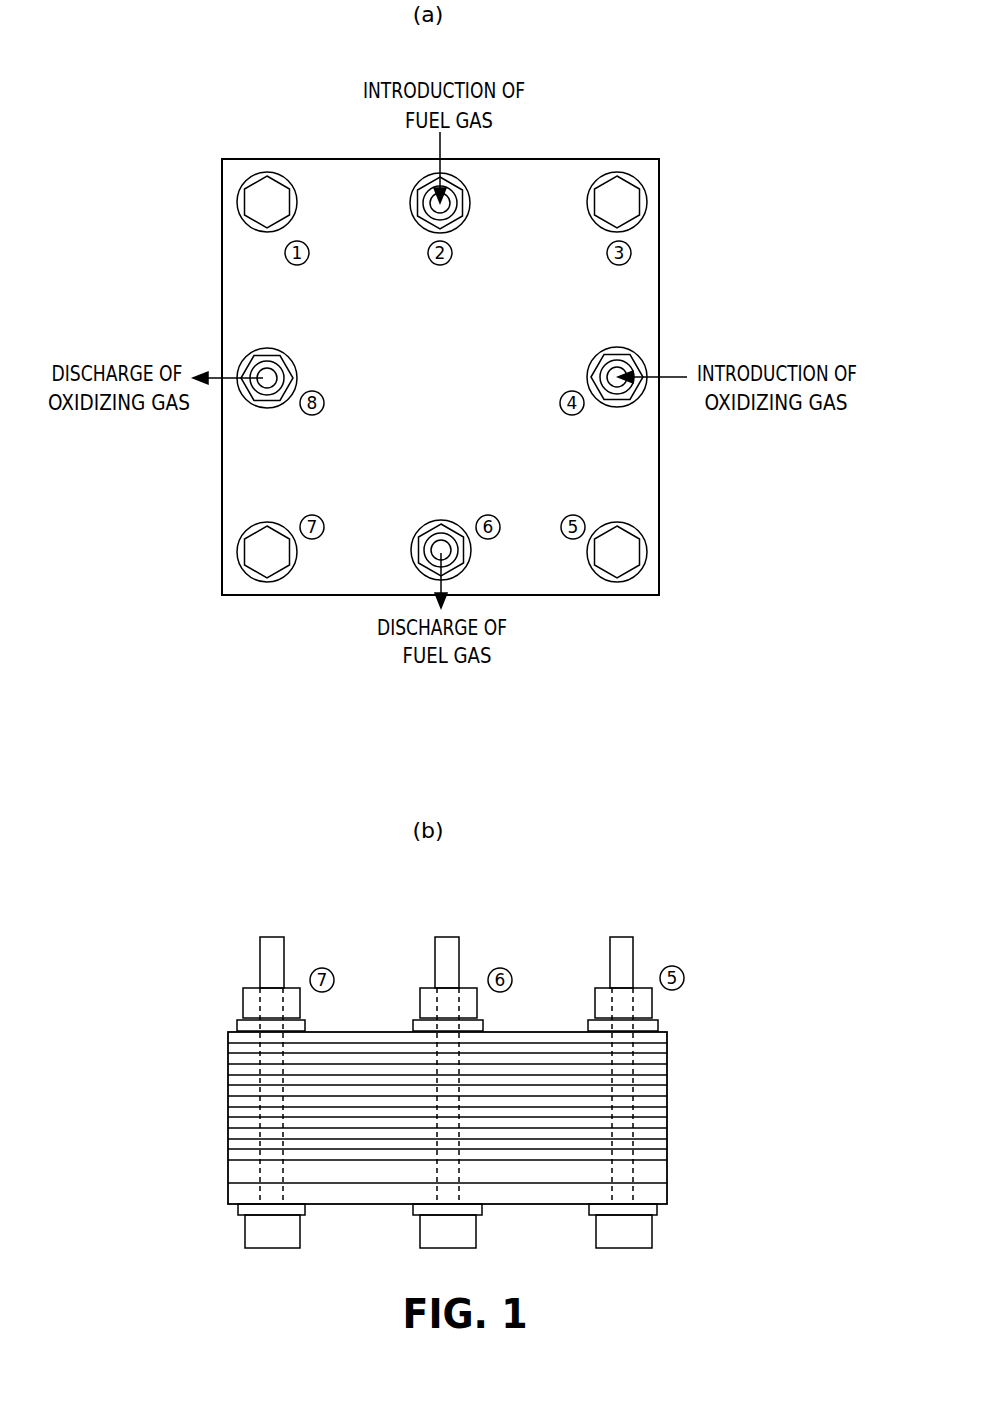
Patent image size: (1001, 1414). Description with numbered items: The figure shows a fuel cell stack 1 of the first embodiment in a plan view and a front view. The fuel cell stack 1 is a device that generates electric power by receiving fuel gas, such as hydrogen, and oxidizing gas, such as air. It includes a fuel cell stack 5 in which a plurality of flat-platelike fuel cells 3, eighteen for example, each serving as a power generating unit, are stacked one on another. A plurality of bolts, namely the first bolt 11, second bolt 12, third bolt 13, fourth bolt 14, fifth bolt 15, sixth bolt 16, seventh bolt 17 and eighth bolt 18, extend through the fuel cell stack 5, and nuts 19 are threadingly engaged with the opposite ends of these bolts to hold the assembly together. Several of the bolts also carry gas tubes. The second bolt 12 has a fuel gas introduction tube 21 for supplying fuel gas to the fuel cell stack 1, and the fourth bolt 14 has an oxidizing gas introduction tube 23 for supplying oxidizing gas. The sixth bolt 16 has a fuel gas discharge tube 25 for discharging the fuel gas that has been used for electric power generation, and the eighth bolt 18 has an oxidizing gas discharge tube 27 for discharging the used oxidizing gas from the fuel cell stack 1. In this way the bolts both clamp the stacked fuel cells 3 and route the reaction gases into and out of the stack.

The fuel cell stack 1 is at (566, 66).
The fuel cell 3 is at (660, 1069).
The fuel cell stack 5 is at (454, 1118).
The first bolt 11 is at (266, 198).
The second bolt 12 is at (418, 197).
The third bolt 13 is at (612, 200).
The fourth bolt 14 is at (620, 355).
The fifth bolt 15 is at (618, 553).
The sixth bolt 16 is at (420, 558).
The seventh bolt 17 is at (265, 560).
The eighth bolt 18 is at (255, 365).
The nut 19 is at (268, 1237).
The fuel gas introduction tube 21 is at (448, 203).
The oxidizing gas introduction tube 23 is at (633, 370).
The fuel gas discharge tube 25 is at (448, 550).
The oxidizing gas discharge tube 27 is at (243, 408).